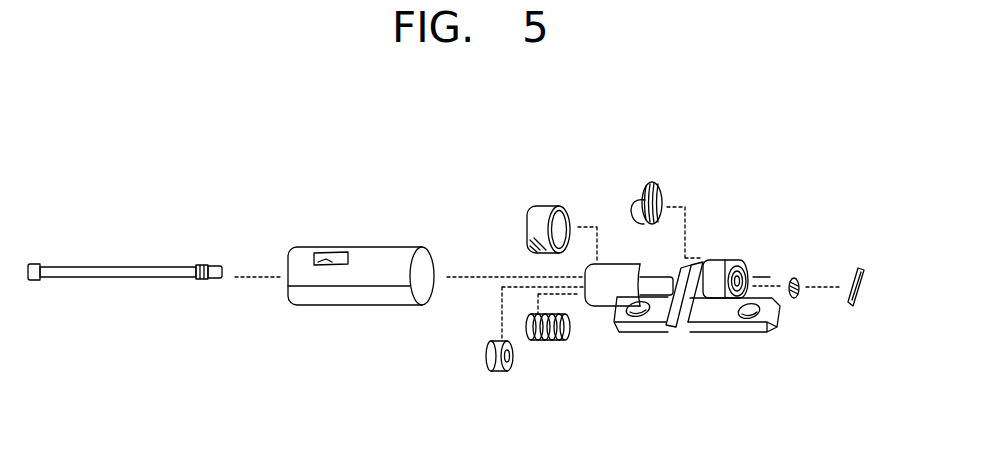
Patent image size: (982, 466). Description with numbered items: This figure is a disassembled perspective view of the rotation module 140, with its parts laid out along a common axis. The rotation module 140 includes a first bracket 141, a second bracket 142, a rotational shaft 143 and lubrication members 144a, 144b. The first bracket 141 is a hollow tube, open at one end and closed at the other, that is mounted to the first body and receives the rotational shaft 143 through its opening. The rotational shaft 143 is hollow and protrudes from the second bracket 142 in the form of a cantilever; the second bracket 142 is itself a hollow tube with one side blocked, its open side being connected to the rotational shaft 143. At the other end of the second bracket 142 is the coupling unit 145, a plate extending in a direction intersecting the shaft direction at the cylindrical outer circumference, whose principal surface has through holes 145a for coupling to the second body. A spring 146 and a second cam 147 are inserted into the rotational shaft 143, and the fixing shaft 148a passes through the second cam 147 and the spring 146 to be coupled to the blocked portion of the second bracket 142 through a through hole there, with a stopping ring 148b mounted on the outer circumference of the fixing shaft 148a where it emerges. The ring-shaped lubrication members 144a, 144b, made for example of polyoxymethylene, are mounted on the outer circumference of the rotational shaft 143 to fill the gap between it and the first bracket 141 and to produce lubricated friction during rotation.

The rotation module 140 is at (460, 165).
The first bracket 141 is at (370, 253).
The second bracket 142 is at (722, 258).
The rotational shaft 143 is at (613, 264).
The lubrication member 144a is at (545, 205).
The lubrication member 144b is at (651, 181).
The coupling unit 145 is at (711, 333).
The through holes 145a is at (757, 277).
The spring 146 is at (552, 341).
The second cam 147 is at (493, 372).
The fixing shaft 148a is at (125, 266).
The stopping ring 148b is at (793, 300).